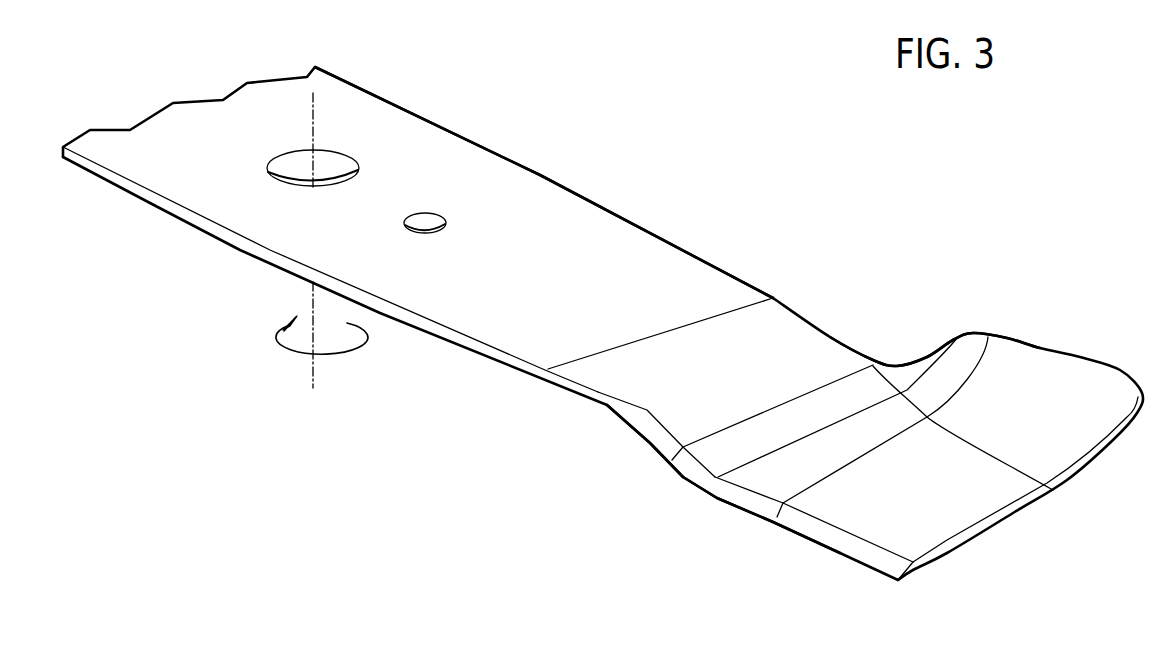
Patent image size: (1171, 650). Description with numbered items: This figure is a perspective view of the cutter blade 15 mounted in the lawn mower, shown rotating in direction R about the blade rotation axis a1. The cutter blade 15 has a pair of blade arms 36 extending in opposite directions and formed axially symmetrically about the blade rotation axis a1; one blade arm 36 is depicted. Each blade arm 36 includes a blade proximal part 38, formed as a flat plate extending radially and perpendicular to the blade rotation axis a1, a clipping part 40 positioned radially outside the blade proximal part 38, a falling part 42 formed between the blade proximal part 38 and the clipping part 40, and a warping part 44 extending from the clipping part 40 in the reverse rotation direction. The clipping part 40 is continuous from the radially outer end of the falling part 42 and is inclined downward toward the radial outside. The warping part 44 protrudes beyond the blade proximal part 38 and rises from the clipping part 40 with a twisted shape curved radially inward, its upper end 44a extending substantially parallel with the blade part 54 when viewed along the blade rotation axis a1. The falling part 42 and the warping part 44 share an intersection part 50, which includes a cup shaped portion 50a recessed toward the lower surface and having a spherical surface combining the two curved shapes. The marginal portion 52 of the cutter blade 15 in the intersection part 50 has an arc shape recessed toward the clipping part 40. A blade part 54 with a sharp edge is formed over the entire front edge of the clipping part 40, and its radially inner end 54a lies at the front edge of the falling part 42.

The cutter blade 15 is at (944, 138).
The blade arm 36 is at (561, 174).
The blade proximal part 38 is at (643, 252).
The clipping part 40 is at (852, 507).
The falling part 42 is at (715, 452).
The warping part 44 is at (1063, 377).
The upper end of the warping part 44a is at (1010, 338).
The intersection part 50 is at (888, 368).
The cup shaped portion 50a is at (898, 388).
The marginal portion 52 is at (898, 365).
The blade part 54 is at (762, 505).
The radially inner end of the blade part 54a is at (653, 435).
The blade rotation axis a1 is at (313, 121).
The rotation direction R is at (316, 344).